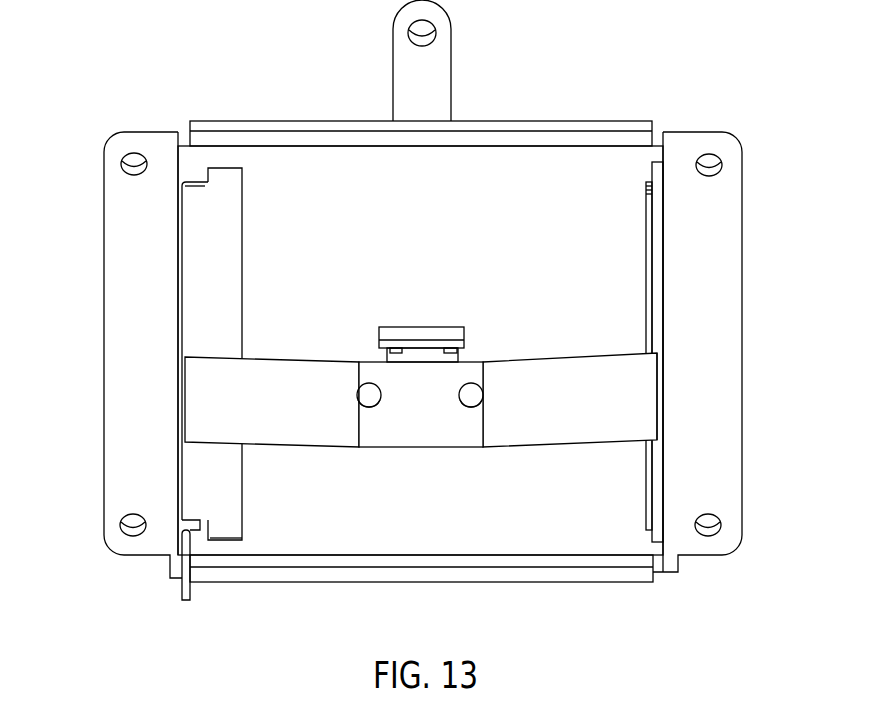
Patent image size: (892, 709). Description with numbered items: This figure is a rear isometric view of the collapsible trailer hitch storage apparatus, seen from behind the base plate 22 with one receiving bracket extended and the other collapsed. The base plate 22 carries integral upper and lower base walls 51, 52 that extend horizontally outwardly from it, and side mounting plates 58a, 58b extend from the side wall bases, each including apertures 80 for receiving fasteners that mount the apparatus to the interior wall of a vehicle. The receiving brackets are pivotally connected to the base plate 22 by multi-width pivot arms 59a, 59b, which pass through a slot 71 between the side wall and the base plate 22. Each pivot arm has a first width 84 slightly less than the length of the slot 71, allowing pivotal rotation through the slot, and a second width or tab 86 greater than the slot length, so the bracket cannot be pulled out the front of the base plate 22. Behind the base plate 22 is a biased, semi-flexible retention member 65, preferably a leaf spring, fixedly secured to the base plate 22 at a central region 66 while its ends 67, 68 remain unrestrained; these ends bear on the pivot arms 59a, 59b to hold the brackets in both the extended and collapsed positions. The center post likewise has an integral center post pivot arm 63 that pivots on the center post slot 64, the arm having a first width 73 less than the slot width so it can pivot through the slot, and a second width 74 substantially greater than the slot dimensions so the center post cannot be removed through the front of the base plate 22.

The base plate 22 is at (534, 160).
The upper base wall 51 is at (477, 119).
The lower base wall 52 is at (520, 583).
The side mounting plate 58a is at (113, 303).
The side mounting plate 58b is at (728, 303).
The aperture 80 is at (709, 530).
The pivot arm 59a is at (666, 521).
The pivot arm 59b is at (195, 308).
The first width 84 is at (198, 206).
The second width 86 is at (226, 184).
The slot 71 is at (195, 533).
The end of retention member 68 is at (197, 395).
The central region 66 is at (420, 434).
The retention member 65 is at (542, 435).
The end of retention member 67 is at (647, 395).
The center post pivot arm 63 is at (418, 304).
The second width 74 is at (433, 340).
The first width 73 is at (455, 358).
The center post slot 64 is at (463, 321).